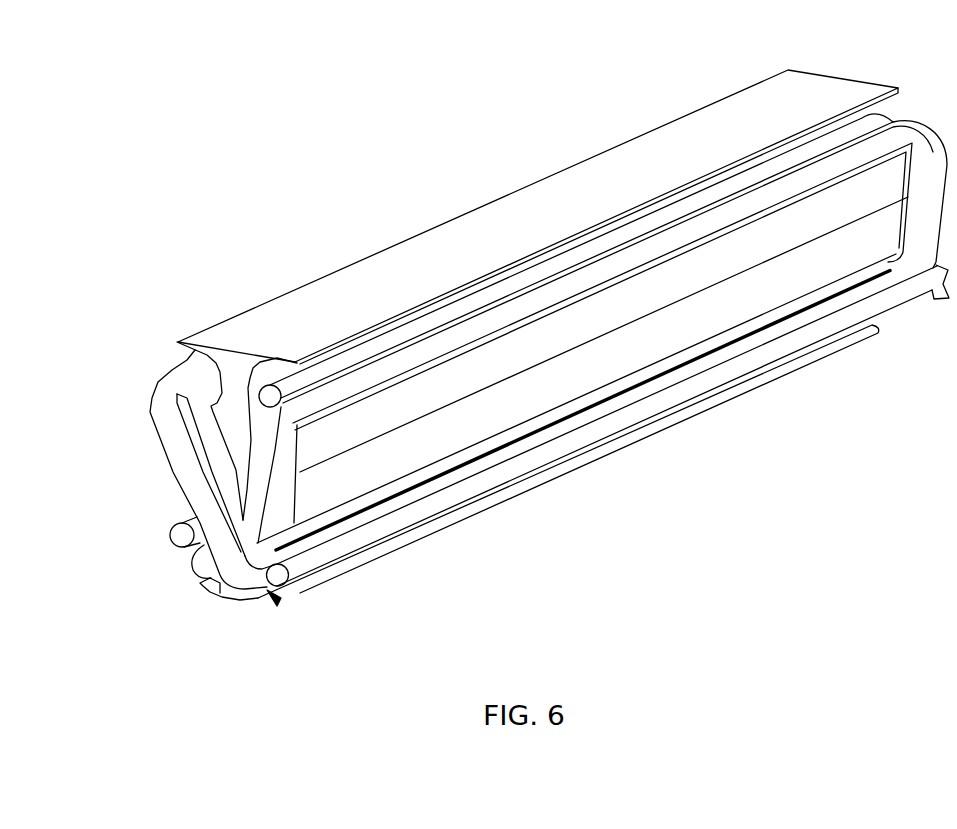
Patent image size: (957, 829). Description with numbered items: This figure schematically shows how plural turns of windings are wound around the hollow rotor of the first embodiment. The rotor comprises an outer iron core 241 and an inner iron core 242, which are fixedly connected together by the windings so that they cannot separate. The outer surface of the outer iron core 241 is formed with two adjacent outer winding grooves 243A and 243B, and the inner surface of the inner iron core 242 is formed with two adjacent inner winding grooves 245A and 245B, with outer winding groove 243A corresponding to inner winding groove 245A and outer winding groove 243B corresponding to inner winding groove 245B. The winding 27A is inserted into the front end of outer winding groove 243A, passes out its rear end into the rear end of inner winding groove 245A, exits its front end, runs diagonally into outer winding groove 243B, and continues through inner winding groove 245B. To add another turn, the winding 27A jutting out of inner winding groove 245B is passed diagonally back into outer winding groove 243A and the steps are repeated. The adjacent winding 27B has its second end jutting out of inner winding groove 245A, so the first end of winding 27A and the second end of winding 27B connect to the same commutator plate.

The outer iron core 241 is at (525, 212).
The winding 27A is at (635, 236).
The winding 27B is at (589, 427).
The inner iron core 242 is at (232, 596).
The outer winding groove 243A is at (260, 372).
The outer winding groove 243B is at (188, 357).
The inner winding groove 245A is at (281, 603).
The inner winding groove 245B is at (203, 587).